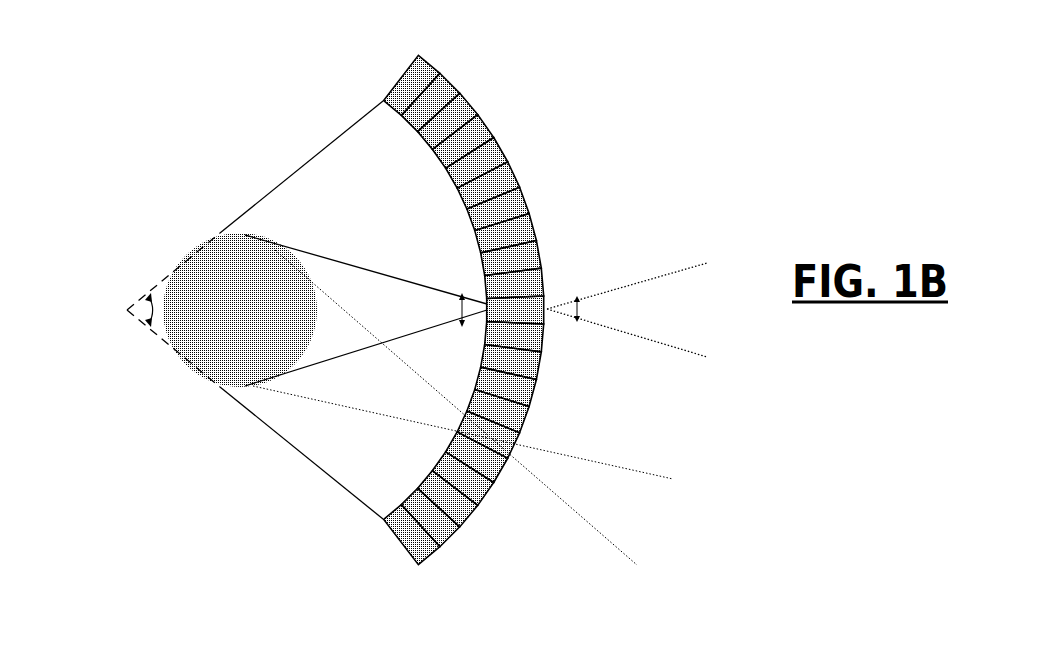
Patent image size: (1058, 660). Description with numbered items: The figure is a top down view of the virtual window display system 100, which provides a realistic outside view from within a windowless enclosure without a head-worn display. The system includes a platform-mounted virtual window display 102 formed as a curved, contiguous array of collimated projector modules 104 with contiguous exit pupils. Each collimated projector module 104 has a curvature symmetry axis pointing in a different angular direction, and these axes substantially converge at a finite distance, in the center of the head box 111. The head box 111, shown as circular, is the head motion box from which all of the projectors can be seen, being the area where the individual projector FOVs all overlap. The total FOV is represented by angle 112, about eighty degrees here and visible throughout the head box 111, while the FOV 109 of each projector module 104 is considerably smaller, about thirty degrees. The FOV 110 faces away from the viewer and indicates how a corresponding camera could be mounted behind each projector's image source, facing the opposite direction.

The virtual window display system 100 is at (149, 102).
The virtual window display 102 is at (384, 213).
The collimated projector module 104 is at (428, 303).
The FOV of each projector module 109 is at (420, 305).
The FOV 110 is at (712, 256).
The head box 111 is at (251, 358).
The total FOV angle 112 is at (116, 320).